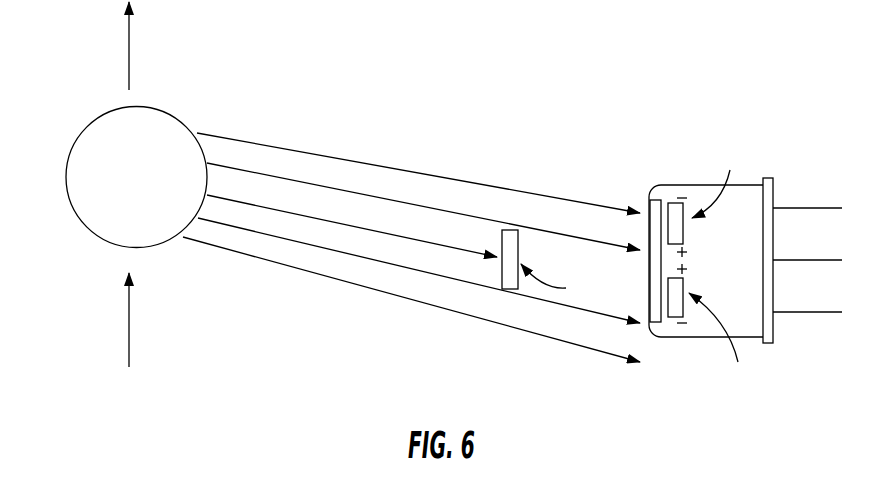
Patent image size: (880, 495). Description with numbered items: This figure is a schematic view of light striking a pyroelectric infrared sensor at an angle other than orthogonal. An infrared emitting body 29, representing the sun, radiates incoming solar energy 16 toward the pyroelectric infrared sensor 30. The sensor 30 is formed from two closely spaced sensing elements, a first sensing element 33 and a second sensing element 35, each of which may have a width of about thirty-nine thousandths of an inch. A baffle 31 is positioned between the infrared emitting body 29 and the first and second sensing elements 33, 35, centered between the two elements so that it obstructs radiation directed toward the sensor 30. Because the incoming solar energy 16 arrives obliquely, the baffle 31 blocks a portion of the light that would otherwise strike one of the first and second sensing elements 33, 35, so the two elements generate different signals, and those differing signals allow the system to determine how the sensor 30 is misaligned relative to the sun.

The infrared emitting body 29 is at (145, 107).
The incoming solar energy 16 is at (367, 162).
The baffle 31 is at (507, 277).
The pyroelectric infrared sensor 30 is at (688, 338).
The first sensing element 33 is at (675, 207).
The second sensing element 35 is at (673, 315).